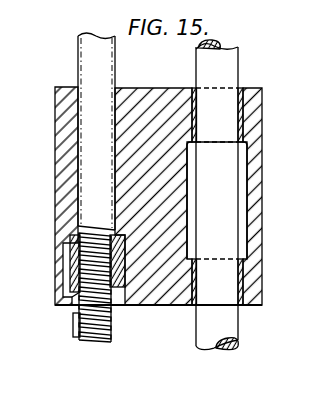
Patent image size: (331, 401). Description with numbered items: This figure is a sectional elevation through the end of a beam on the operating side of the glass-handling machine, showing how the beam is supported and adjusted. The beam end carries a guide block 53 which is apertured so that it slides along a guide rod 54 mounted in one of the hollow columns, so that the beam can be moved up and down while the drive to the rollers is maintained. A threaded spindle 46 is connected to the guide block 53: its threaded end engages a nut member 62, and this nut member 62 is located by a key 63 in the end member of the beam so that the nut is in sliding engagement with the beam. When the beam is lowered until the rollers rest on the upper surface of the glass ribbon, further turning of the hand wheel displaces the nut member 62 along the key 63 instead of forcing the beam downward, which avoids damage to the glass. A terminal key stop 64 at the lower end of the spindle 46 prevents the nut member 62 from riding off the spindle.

The spindle 46 is at (78, 194).
The guide block 53 is at (149, 296).
The guide rod 54 is at (210, 204).
The nut member 62 is at (115, 277).
The key 63 is at (72, 277).
The terminal key stop 64 is at (79, 330).